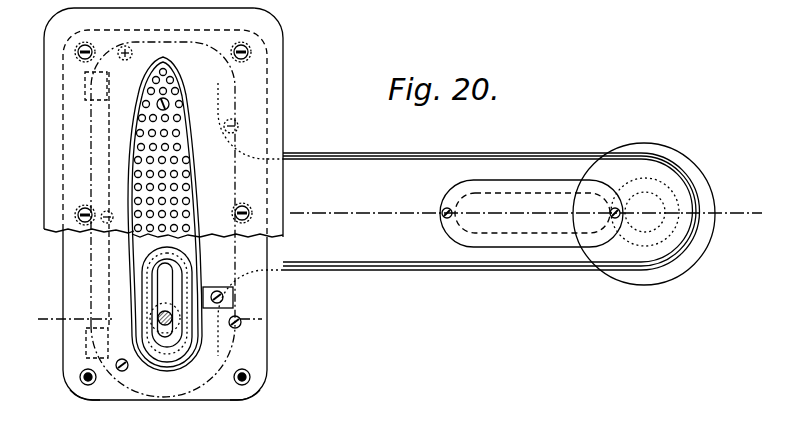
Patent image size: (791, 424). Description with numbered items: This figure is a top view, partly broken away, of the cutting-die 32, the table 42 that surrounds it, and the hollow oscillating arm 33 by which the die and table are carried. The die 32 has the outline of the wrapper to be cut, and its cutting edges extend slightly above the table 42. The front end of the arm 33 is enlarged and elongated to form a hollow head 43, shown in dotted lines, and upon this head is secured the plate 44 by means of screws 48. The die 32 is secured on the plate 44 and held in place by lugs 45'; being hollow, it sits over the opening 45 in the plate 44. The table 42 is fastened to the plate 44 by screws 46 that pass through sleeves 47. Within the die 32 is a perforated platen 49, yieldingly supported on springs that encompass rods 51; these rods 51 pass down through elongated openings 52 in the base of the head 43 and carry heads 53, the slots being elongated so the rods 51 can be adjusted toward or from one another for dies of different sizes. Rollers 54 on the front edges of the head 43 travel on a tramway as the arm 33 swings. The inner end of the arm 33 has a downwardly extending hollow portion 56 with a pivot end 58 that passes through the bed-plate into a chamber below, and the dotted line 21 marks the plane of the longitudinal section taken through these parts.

The dotted line 21 21 is at (397, 263).
The cutting-die 32 is at (194, 210).
The oscillating arm 33 is at (491, 211).
The table 42 is at (179, 122).
The head 43 is at (234, 93).
The plate 44 is at (203, 395).
The opening 45 is at (148, 214).
The lugs 45' is at (222, 295).
The screws 46 is at (84, 44).
The sleeves 47 is at (82, 386).
The screws 48 is at (126, 46).
The platen 49 is at (183, 192).
The rods 51 is at (174, 322).
The elongated openings 52 is at (165, 288).
The heads 53 is at (149, 313).
The rollers 54 is at (85, 90).
The downwardly-extending hollow portion 56 is at (618, 240).
The pivot end 58 is at (650, 228).